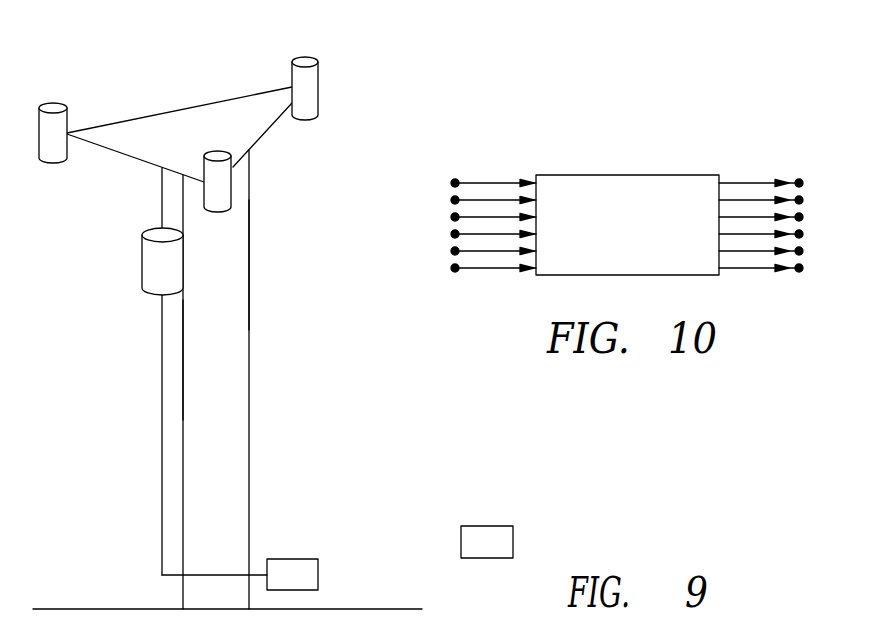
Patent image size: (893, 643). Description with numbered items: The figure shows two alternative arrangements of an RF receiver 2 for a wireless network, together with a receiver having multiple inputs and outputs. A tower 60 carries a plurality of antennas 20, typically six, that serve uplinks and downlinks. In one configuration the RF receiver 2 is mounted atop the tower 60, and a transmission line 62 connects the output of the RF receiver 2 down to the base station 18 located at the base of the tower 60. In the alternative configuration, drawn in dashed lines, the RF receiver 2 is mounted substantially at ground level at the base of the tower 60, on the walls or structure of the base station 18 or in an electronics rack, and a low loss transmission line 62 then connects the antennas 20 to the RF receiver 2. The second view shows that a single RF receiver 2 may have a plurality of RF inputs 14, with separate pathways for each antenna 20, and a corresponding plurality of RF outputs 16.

In FIG. 9, the RF receiver 2 is at (142, 268).
In FIG. 10, the RF receiver 2 is at (628, 183).
In FIG. 10, the RF inputs 14 is at (448, 178).
In FIG. 10, the RF outputs 16 is at (809, 178).
In FIG. 9, the base station 18 is at (292, 559).
In FIG. 9, the antennas 20 is at (67, 120).
In FIG. 9, the tower 60 is at (163, 495).
In FIG. 9, the transmission line 62 is at (238, 267).